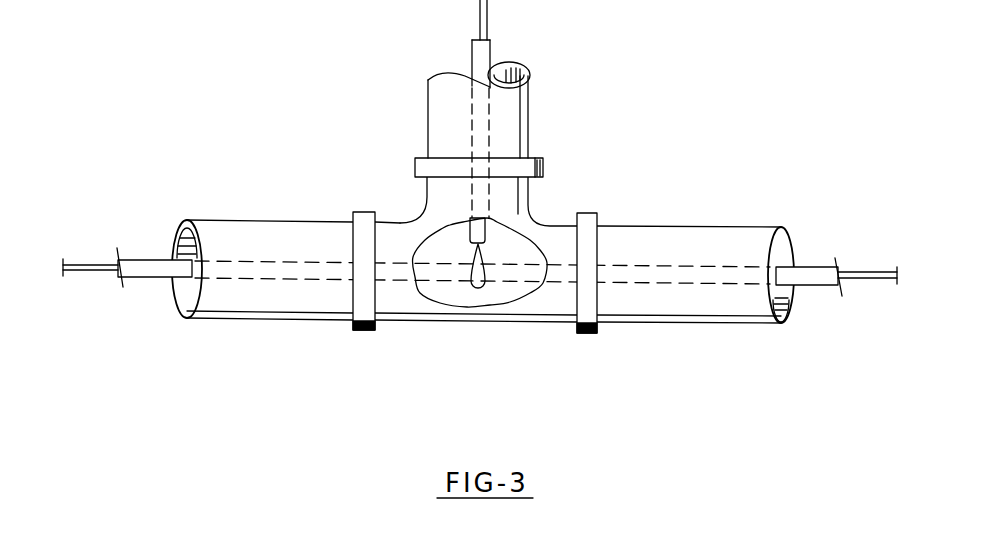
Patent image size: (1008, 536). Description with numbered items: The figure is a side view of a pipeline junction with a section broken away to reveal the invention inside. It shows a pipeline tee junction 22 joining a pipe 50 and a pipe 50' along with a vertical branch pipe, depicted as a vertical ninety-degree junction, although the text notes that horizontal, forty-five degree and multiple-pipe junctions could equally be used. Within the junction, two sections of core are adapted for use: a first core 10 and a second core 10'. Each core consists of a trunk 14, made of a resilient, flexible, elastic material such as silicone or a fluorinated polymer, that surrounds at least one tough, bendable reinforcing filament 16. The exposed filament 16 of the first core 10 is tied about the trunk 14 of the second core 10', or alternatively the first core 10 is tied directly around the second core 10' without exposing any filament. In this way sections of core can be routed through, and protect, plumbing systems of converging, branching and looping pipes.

The core apparatus 10 is at (413, 121).
The second core 10' is at (506, 309).
The trunk 14 is at (448, 272).
The reinforcing filament 16 is at (478, 283).
The pipeline tee junction 22 is at (535, 215).
The pipe 50 is at (695, 236).
The pipe 50' is at (262, 223).